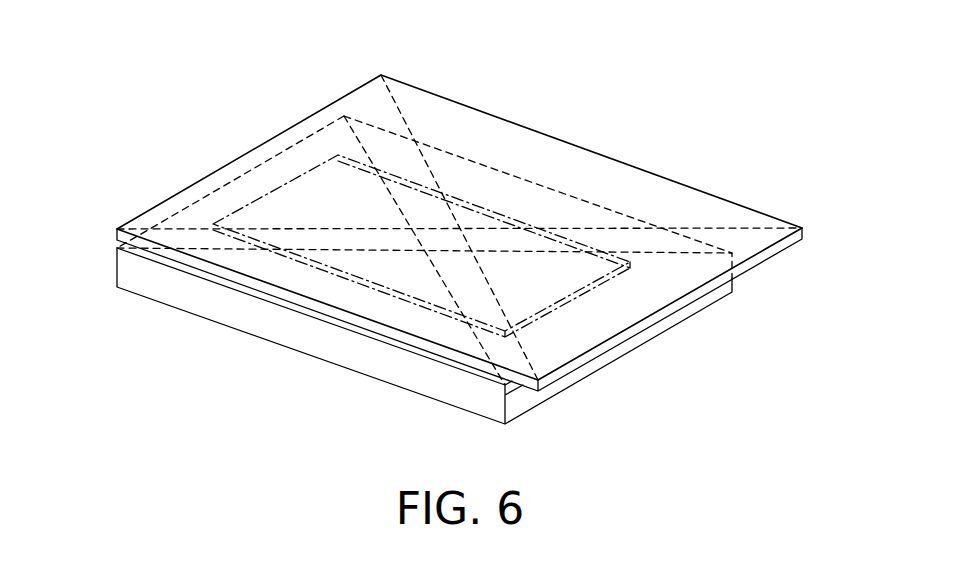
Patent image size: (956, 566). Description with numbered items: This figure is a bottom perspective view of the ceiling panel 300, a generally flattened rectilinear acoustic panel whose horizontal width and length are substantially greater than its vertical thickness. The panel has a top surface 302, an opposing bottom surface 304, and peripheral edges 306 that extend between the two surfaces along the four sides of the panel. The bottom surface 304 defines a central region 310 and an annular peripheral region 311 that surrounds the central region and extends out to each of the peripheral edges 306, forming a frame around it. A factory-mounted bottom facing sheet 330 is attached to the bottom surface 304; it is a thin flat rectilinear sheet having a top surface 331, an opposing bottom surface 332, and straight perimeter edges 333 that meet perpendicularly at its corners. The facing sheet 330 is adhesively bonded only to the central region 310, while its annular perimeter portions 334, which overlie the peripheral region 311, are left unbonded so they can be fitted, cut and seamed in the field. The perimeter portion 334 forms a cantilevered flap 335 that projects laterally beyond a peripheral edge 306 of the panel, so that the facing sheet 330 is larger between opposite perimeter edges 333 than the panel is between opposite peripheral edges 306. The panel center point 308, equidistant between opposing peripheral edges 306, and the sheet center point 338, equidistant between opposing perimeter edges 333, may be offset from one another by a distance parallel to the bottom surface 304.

The ceiling panel 300 is at (105, 129).
The top surface 302 is at (425, 289).
The bottom surface 304 is at (287, 302).
The peripheral edges 306 is at (187, 236).
The panel center point 308 is at (427, 250).
The central region 310 is at (213, 228).
The peripheral region 311 is at (117, 241).
The bottom facing sheet 330 is at (483, 200).
The top surface 331 is at (778, 253).
The bottom surface 332 is at (635, 198).
The perimeter edges 333 is at (243, 157).
The perimeter portions 334 is at (440, 167).
The flap 335 is at (753, 221).
The sheet center point 338 is at (461, 228).